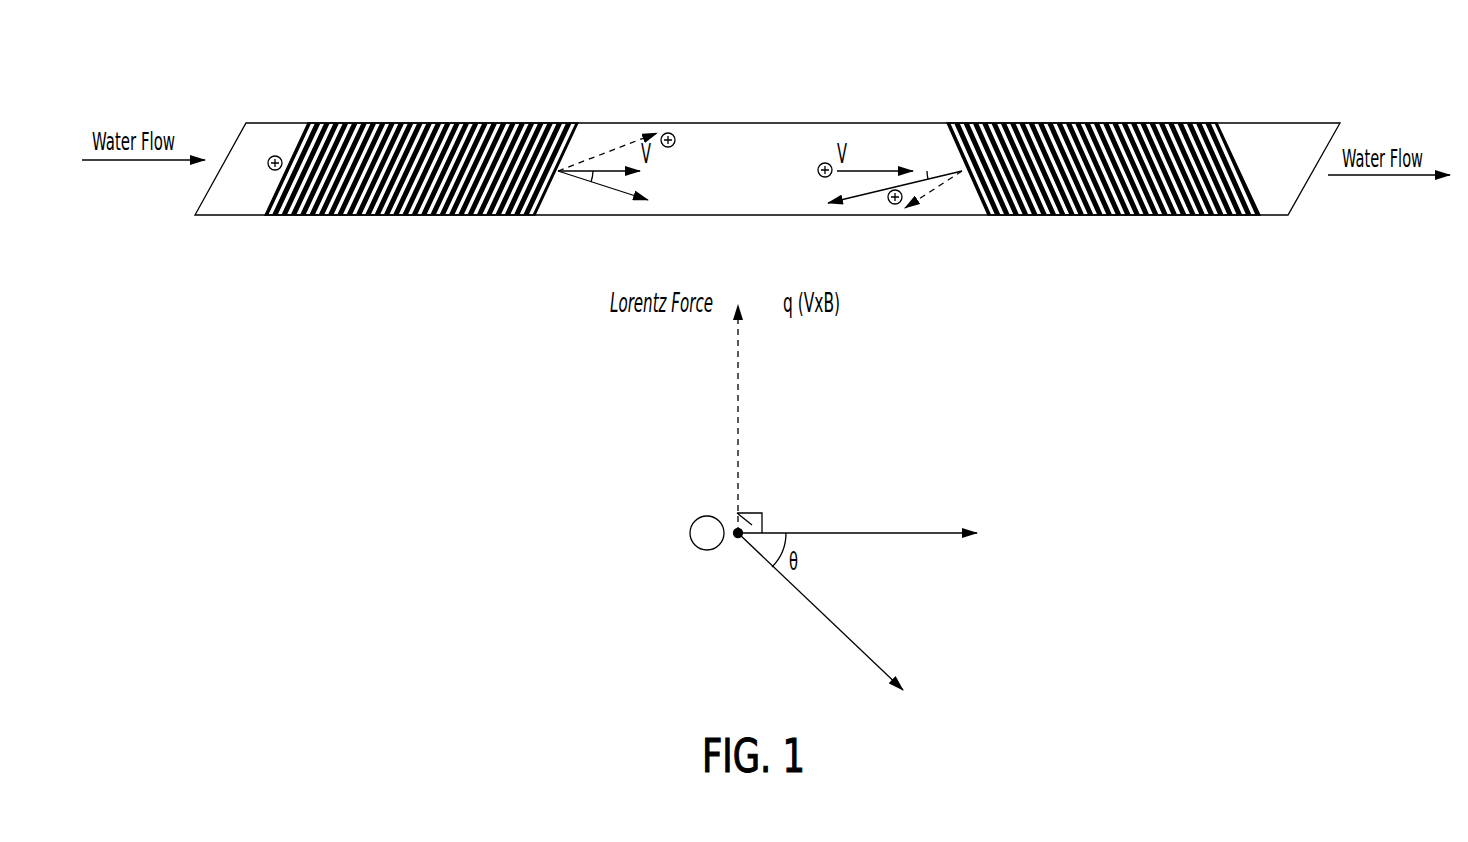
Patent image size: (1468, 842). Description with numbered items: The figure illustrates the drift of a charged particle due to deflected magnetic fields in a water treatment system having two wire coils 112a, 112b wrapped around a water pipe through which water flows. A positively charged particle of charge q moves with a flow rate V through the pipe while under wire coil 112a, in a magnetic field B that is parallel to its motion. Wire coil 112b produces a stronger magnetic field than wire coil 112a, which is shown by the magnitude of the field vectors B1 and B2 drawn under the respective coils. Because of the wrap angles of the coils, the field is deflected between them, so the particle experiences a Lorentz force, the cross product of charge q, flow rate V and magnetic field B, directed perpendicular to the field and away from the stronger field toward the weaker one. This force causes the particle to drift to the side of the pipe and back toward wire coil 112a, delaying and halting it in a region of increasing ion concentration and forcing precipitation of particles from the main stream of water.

The wire coil 112a is at (437, 120).
The wire coil 112b is at (1101, 120).
The magnetic field of first coil B1 is at (615, 189).
The magnetic field of second coil B2 is at (884, 190).
The magnetic field B is at (866, 534).
The flow rate V is at (827, 623).
The charge q is at (707, 533).